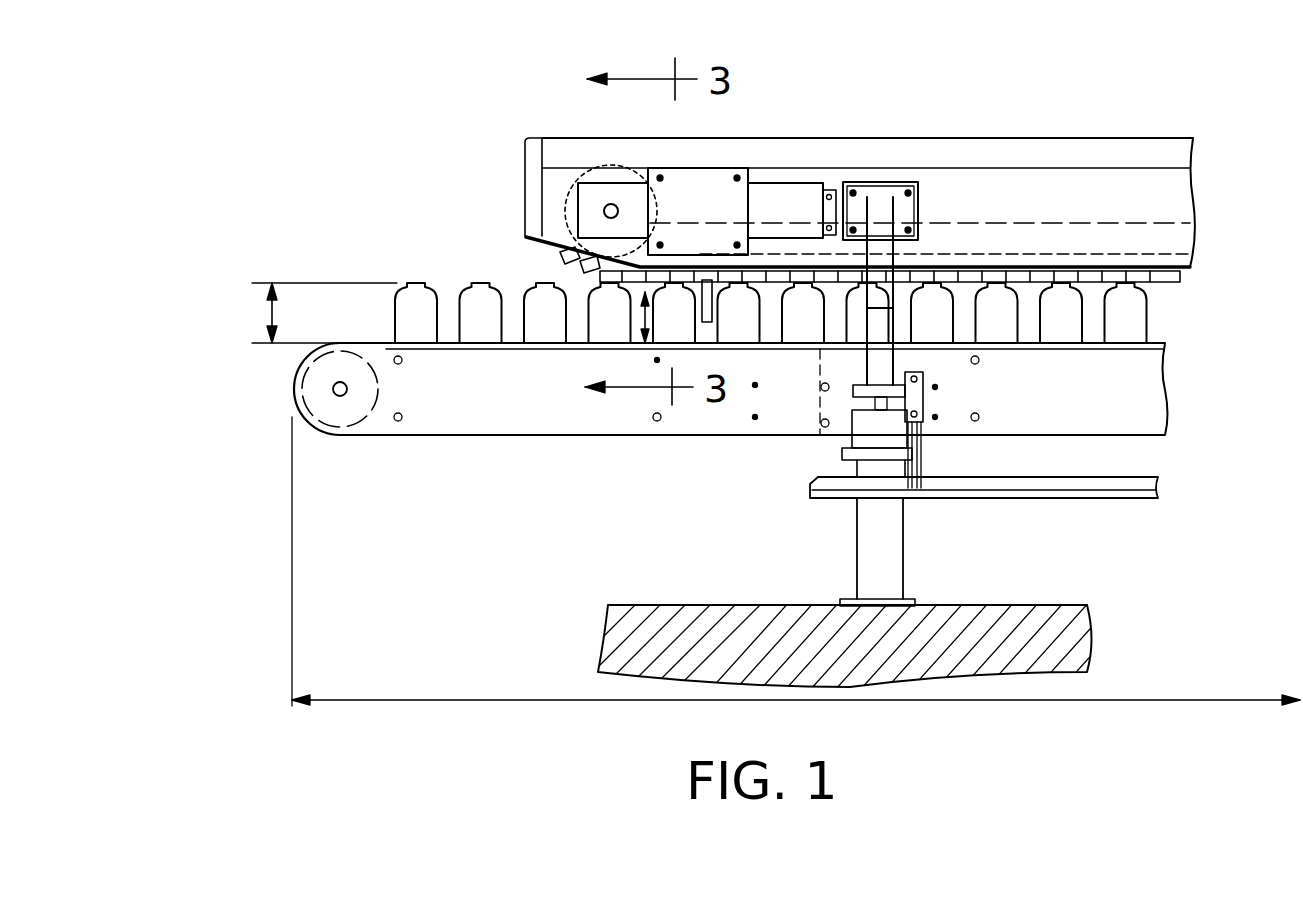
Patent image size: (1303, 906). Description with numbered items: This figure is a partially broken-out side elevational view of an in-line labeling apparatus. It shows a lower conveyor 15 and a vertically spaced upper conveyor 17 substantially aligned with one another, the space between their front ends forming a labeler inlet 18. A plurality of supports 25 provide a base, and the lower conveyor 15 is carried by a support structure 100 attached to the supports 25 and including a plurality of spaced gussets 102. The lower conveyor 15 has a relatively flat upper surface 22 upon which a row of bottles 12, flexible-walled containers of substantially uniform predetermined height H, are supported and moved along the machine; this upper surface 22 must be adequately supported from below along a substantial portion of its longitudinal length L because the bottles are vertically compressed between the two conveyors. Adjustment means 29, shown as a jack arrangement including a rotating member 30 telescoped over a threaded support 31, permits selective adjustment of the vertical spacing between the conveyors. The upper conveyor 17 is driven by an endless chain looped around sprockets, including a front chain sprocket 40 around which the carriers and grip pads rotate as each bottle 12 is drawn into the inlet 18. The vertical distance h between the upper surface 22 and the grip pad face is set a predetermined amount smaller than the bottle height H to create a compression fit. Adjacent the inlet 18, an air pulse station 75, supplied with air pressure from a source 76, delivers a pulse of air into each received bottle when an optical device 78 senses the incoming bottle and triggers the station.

The bottles 12 is at (544, 326).
The lower conveyor 15 is at (545, 440).
The upper conveyor 17 is at (556, 130).
The labeler inlet 18 is at (500, 250).
The upper surface 22 is at (1158, 342).
The supports 25 is at (883, 560).
The adjustment means 29 is at (800, 445).
The rotating member 30 is at (882, 438).
The threaded support 31 is at (842, 453).
The front chain sprocket 40 is at (620, 160).
The air pulse station 75 is at (775, 115).
The air pressure source 76 is at (788, 193).
The optical device 78 is at (707, 322).
The support structure 100 is at (1082, 520).
The gussets 102 is at (923, 462).
The bottle height H is at (272, 312).
The vertical distance h is at (642, 312).
The longitudinal length L is at (1180, 688).